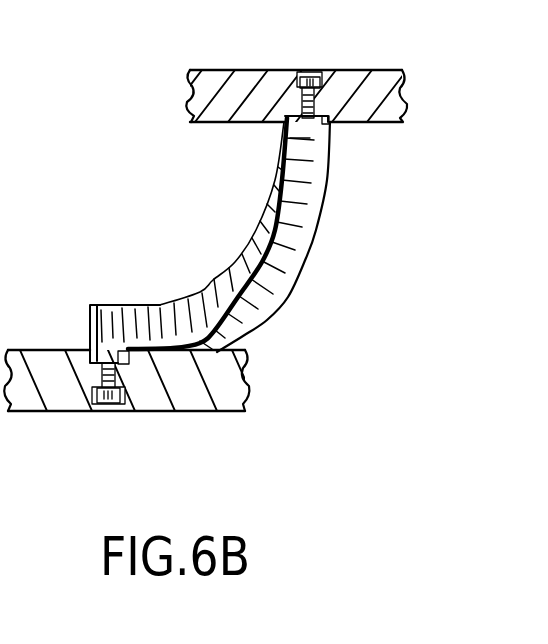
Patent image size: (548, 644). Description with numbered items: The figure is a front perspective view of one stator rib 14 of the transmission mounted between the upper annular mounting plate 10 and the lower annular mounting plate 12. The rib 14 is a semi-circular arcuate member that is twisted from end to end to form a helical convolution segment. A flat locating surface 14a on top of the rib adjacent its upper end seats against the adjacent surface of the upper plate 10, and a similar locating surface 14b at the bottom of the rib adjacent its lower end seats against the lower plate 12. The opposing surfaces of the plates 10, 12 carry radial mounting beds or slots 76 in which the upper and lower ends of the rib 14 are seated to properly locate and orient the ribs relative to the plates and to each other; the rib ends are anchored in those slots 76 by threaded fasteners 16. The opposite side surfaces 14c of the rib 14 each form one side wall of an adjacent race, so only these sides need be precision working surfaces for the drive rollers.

The upper annular mounting plate 10 is at (378, 72).
The lower annular mounting plate 12 is at (210, 400).
The stator rib 14 is at (258, 246).
The upper locating surface 14a is at (272, 121).
The lower locating surface 14b is at (97, 333).
The side surfaces of rib 14c is at (200, 283).
The threaded fastener 16 is at (307, 77).
The radial mounting slot 76 is at (323, 122).